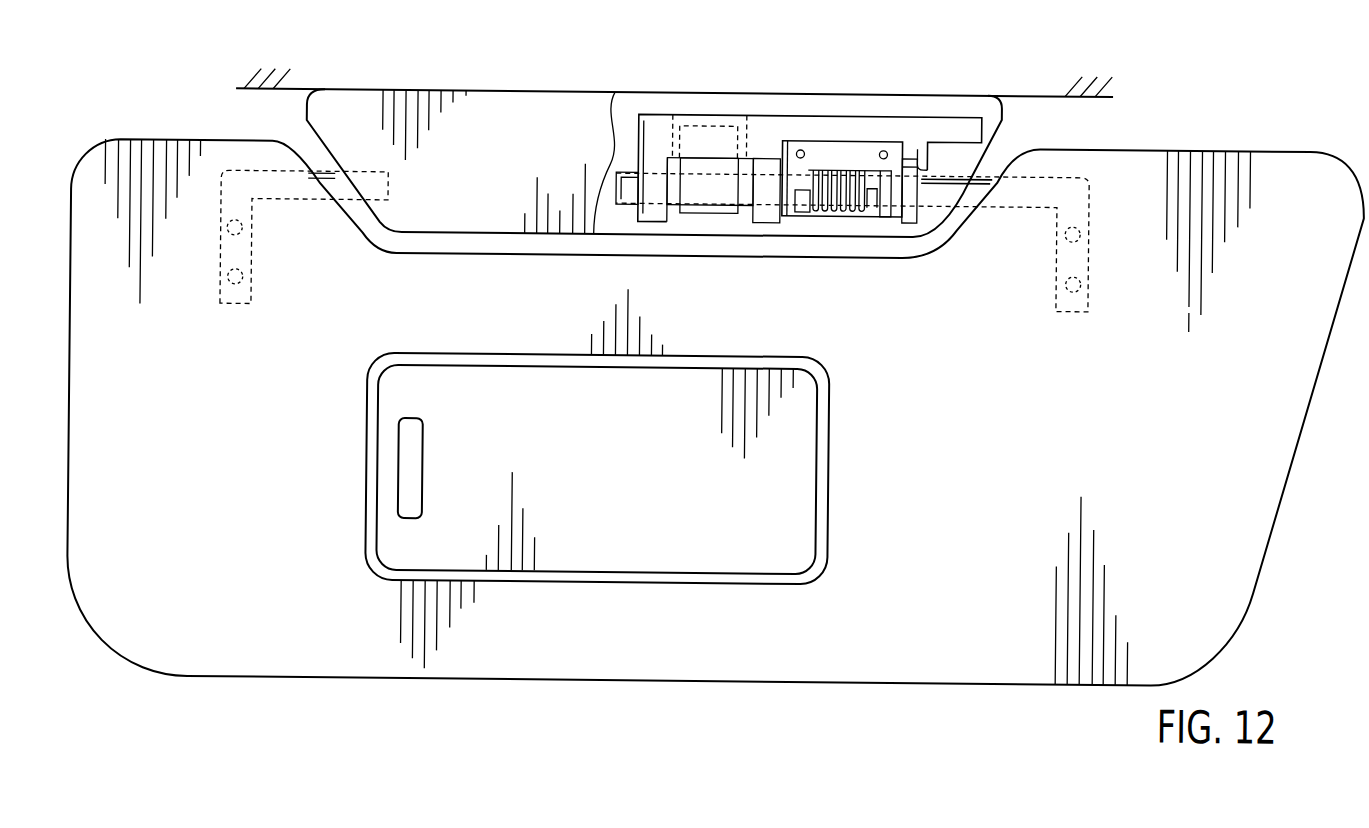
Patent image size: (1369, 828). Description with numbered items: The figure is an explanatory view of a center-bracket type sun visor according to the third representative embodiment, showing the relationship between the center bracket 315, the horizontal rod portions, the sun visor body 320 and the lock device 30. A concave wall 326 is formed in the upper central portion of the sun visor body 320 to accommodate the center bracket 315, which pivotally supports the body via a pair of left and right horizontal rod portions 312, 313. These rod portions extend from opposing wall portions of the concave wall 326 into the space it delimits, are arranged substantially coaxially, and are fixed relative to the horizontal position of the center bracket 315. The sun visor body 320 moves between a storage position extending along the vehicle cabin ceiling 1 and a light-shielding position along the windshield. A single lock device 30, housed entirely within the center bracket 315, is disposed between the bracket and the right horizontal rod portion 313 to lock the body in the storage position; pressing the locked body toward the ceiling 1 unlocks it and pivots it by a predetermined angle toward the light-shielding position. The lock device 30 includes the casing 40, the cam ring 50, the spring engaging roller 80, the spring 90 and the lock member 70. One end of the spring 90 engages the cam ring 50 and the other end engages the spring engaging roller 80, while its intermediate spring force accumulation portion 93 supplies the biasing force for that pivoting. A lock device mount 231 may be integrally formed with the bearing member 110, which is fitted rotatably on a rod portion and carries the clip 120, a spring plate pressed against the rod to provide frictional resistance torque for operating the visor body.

The vehicle cabin ceiling 1 is at (1070, 97).
The lock device 30 is at (867, 220).
The casing 40 is at (840, 149).
The cam ring 50 is at (906, 220).
The lock member 70 is at (922, 160).
The spring engaging roller 80 is at (799, 212).
The spring 90 is at (837, 214).
The spring force accumulation portion 93 is at (838, 265).
The bearing member 110 is at (759, 213).
The clip 120 is at (706, 213).
The lock device mount 231 is at (790, 127).
The left horizontal rod portion 312 is at (330, 194).
The right horizontal rod portion 313 is at (938, 190).
The center bracket 315 is at (494, 110).
The sun visor body 320 is at (1243, 140).
The concave wall 326 is at (467, 239).